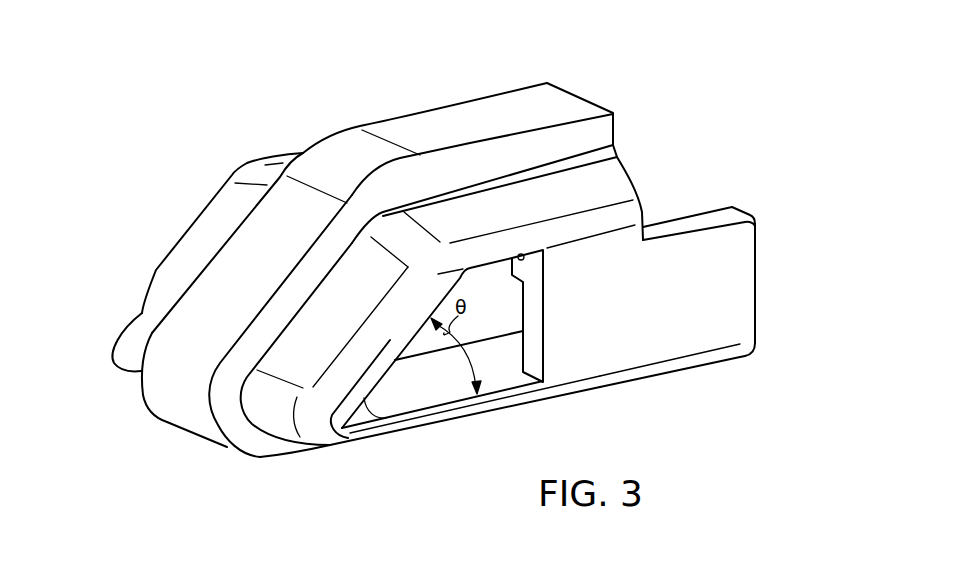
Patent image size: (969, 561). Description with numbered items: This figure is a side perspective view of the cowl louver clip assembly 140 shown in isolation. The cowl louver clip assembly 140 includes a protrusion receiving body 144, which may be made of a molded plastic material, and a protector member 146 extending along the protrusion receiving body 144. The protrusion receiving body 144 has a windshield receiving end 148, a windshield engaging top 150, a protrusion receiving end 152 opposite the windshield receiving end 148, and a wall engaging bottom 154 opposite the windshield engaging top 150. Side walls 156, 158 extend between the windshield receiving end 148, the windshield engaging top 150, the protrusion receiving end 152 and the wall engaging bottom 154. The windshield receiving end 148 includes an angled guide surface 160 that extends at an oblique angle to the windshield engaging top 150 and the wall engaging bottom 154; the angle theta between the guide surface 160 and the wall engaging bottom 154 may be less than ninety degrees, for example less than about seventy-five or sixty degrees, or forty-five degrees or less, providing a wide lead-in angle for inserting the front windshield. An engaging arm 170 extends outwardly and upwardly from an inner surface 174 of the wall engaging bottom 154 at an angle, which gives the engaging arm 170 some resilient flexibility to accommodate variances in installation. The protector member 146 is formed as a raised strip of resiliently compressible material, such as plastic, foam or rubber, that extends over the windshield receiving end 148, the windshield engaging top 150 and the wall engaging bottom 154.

The cowl louver clip assembly 140 is at (682, 118).
The protrusion receiving body 144 is at (557, 203).
The protector member 146 is at (530, 97).
The windshield receiving end 148 is at (136, 214).
The windshield engaging top 150 is at (358, 90).
The protrusion receiving end 152 is at (750, 180).
The wall engaging bottom 154 is at (436, 455).
The side wall 156 is at (650, 348).
The side wall 158 is at (204, 191).
The angled guide surface 160 is at (148, 297).
The engaging arm 170 is at (507, 298).
The inner surface 174 is at (493, 373).